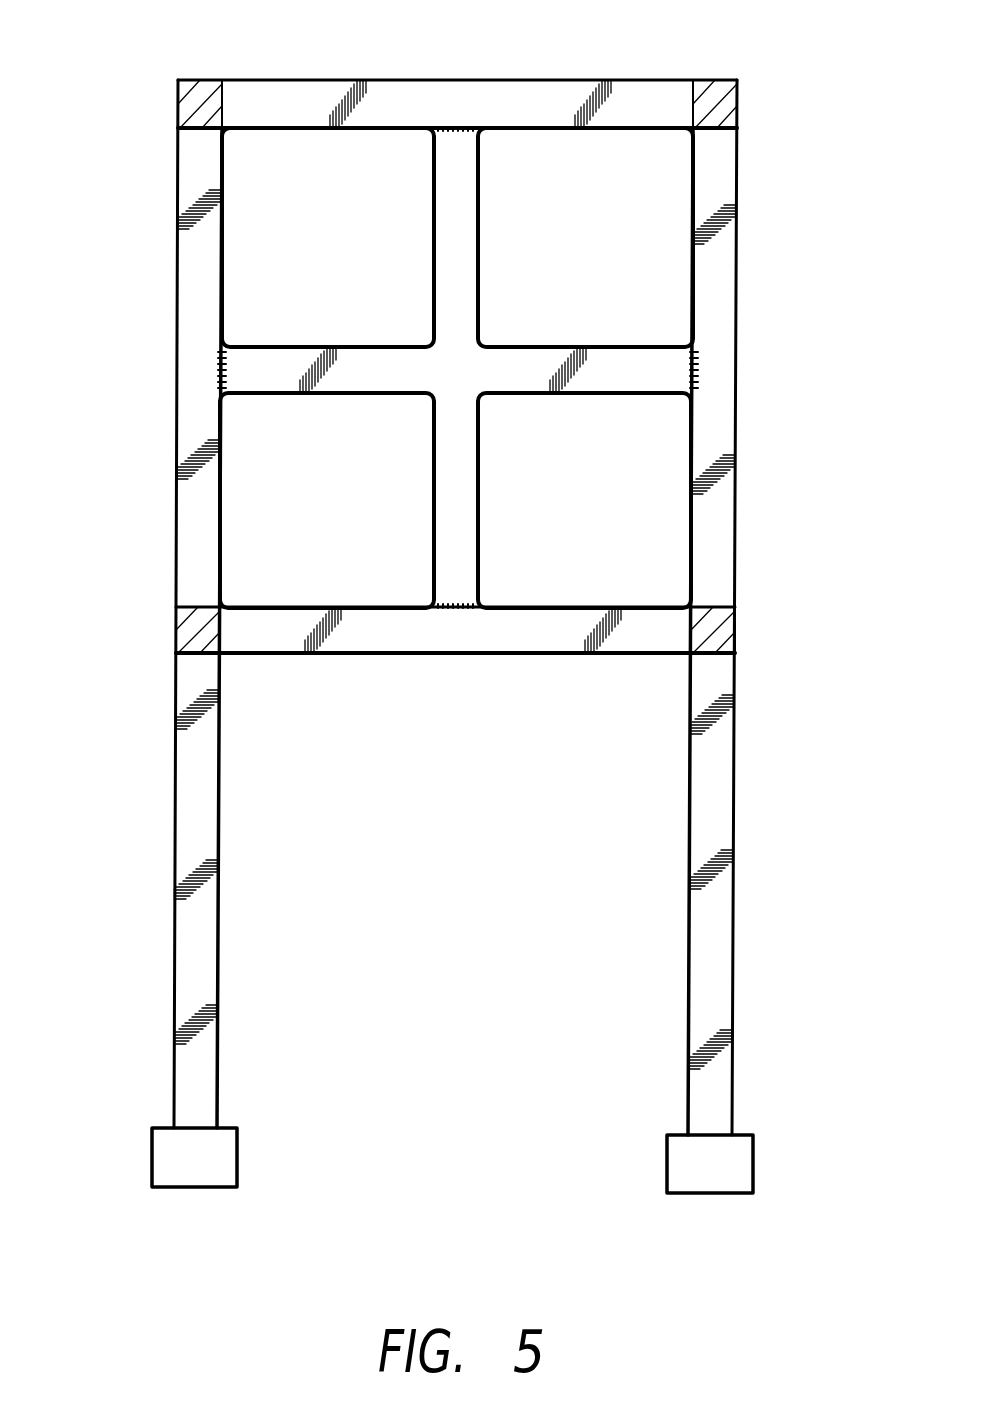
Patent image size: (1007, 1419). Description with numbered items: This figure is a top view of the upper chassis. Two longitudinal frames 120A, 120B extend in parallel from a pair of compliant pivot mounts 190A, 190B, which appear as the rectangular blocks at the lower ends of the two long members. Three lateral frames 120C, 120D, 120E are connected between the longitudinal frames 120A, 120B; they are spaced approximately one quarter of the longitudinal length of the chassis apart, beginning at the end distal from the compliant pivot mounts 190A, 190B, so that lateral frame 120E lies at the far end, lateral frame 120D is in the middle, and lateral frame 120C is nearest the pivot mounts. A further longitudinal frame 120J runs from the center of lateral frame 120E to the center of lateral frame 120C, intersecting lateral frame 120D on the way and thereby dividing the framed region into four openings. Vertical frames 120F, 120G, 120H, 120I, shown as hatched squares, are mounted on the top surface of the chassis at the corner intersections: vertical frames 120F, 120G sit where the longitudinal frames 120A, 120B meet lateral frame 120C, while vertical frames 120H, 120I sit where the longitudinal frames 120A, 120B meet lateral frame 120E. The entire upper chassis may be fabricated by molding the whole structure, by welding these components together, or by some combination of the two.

The longitudinal frame 120A is at (733, 882).
The longitudinal frame 120B is at (170, 920).
The lateral frame 120C is at (502, 643).
The lateral frame 120D is at (612, 385).
The lateral frame 120E is at (455, 98).
The vertical frame 120F is at (173, 630).
The vertical frame 120G is at (728, 633).
The vertical frame 120H is at (728, 115).
The vertical frame 120I is at (202, 88).
The longitudinal frame 120J is at (465, 228).
The compliant pivot mount 190A is at (703, 1172).
The compliant pivot mount 190B is at (182, 1167).